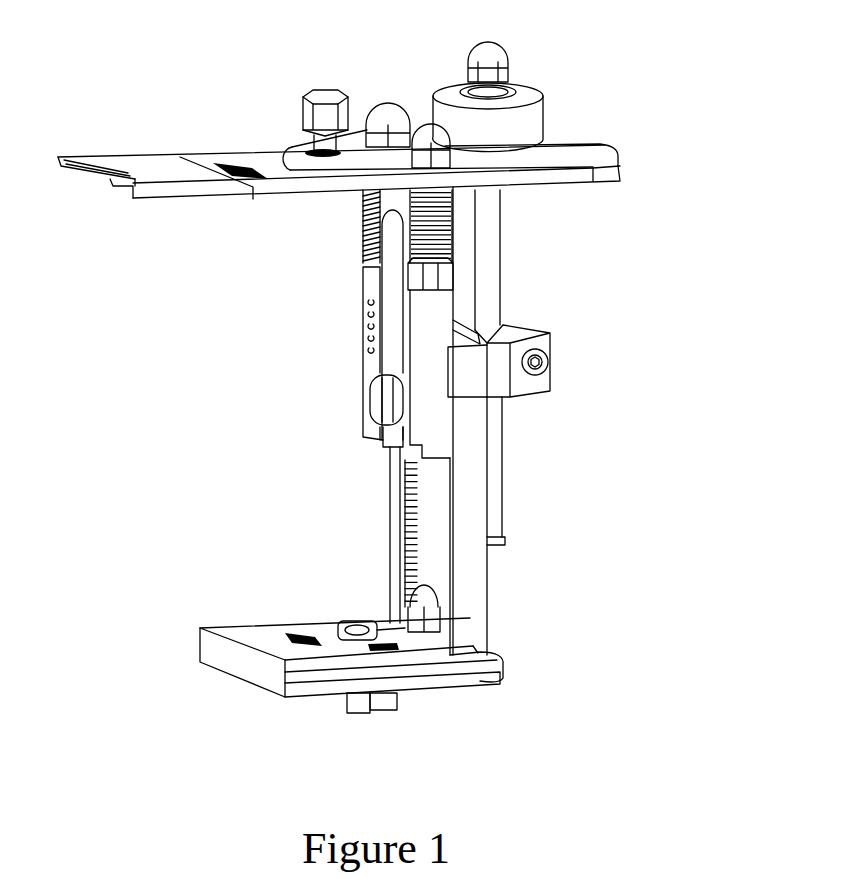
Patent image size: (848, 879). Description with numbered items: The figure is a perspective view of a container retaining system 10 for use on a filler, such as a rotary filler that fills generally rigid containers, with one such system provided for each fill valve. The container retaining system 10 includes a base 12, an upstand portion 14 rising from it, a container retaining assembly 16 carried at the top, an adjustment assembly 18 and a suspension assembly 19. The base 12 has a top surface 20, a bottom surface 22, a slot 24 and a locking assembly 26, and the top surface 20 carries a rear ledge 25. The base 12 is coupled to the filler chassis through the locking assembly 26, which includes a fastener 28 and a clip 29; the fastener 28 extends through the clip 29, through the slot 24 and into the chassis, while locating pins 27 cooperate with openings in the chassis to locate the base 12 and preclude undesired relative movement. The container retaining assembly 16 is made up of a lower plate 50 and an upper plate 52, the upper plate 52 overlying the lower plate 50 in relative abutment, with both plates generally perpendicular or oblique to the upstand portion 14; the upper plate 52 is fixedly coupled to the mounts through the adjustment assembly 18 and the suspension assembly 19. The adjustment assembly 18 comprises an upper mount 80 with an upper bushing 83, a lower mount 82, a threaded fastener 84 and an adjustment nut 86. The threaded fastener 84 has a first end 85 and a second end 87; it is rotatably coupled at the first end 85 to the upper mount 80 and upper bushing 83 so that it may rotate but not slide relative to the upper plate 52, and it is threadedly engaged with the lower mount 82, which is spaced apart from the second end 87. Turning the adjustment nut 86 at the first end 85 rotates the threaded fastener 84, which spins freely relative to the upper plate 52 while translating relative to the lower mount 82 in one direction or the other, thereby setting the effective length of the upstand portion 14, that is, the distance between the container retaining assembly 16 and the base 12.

The container retaining system 10 is at (697, 444).
The base 12 is at (178, 648).
The upstand portion 14 is at (280, 467).
The container retaining assembly 16 is at (84, 188).
The adjustment assembly 18 is at (536, 286).
The suspension assembly 19 is at (366, 230).
The top surface 20 is at (264, 630).
The bottom surface 22 is at (313, 700).
The slot 24 is at (387, 622).
The rear ledge 25 is at (478, 654).
The locking assembly 26 is at (360, 632).
The locating pins 27 is at (391, 700).
The fastener 28 is at (360, 637).
The clip 29 is at (397, 633).
The lower plate 50 is at (614, 181).
The upper plate 52 is at (604, 148).
The upper mount 80 is at (538, 121).
The lower mount 82 is at (550, 367).
The upper bushing 83 is at (521, 93).
The threaded fastener 84 is at (502, 472).
The first end 85 is at (498, 541).
The adjustment nut 86 is at (494, 52).
The second end 87 is at (538, 44).